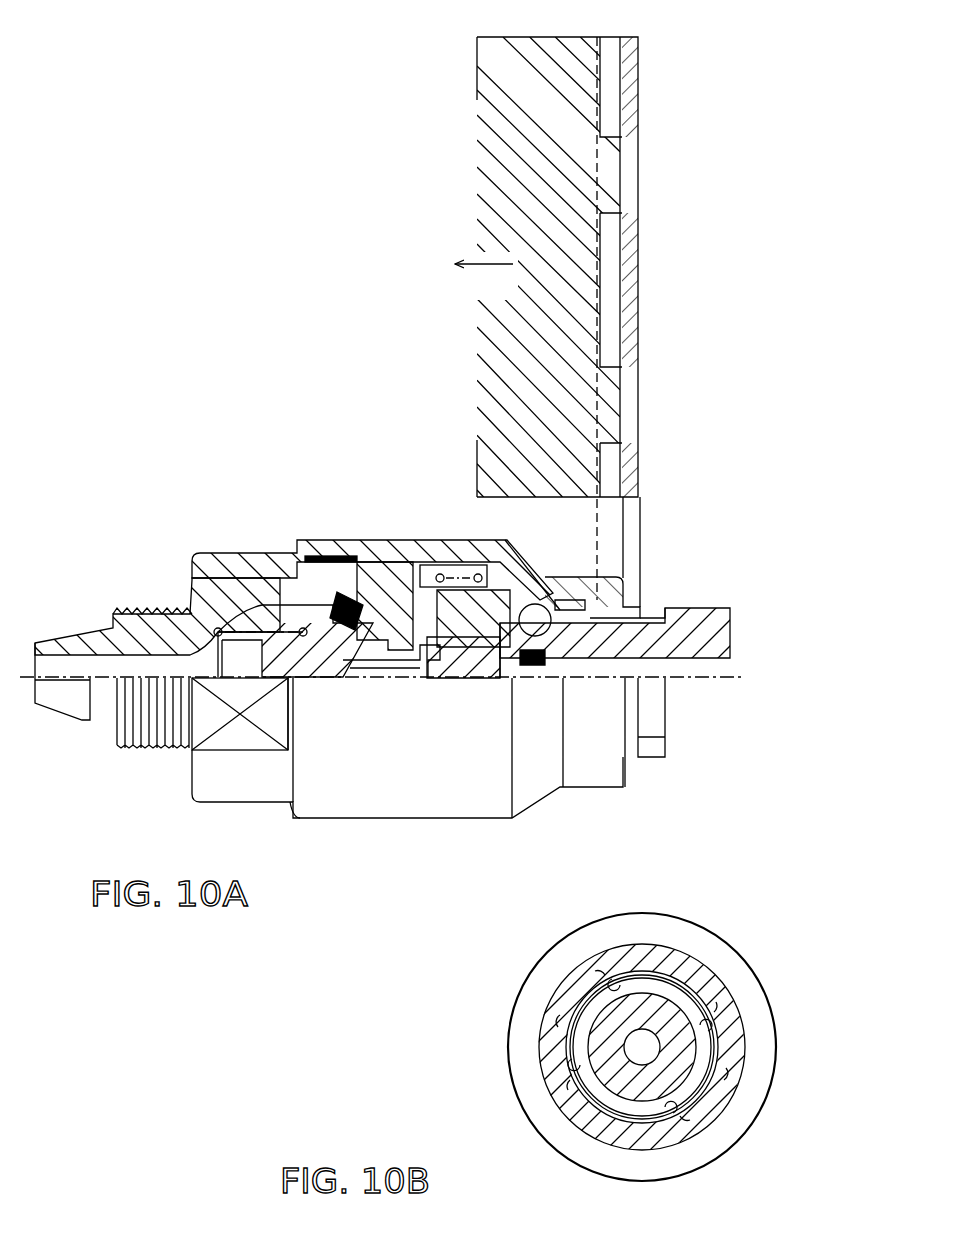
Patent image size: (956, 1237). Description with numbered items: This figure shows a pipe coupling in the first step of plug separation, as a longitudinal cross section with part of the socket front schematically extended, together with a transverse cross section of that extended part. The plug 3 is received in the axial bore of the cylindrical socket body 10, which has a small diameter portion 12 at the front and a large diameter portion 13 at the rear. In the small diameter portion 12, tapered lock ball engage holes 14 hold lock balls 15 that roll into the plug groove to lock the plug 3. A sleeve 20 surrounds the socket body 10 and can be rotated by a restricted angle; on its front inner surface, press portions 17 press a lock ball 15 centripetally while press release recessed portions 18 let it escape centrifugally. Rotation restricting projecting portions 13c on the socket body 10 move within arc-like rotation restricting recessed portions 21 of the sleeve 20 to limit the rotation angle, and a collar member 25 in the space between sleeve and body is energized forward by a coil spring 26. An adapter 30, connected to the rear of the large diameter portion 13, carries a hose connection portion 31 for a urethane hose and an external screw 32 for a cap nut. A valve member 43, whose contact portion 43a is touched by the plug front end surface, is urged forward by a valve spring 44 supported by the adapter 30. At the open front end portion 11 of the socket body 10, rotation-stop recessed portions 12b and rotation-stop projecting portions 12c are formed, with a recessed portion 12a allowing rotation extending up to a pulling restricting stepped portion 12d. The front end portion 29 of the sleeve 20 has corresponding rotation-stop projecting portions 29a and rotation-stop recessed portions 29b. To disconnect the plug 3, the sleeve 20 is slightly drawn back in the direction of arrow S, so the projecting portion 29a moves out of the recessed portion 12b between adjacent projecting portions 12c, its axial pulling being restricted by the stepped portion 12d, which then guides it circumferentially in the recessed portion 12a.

In FIG. 10A, the plug 3 is at (724, 600).
In FIG. 10B, the plug 3 is at (615, 1100).
In FIG. 10A, the socket body 10 is at (648, 183).
In FIG. 10B, the socket body 10 is at (578, 1090).
In FIG. 10A, the front end portion 11 is at (640, 612).
In FIG. 10B, the front end portion 11 is at (578, 1053).
In FIG. 10A, the small diameter portion 12 is at (584, 636).
In FIG. 10A, the recessed portion for allowing rotation 12a is at (612, 120).
In FIG. 10A, the rotation-stop recessed portion 12b is at (630, 205).
In FIG. 10B, the rotation-stop recessed portion 12b is at (598, 973).
In FIG. 10A, the rotation-stop projecting portion 12c is at (630, 280).
In FIG. 10B, the rotation-stop projecting portion 12c is at (692, 1000).
In FIG. 10A, the pulling restricting stepped portion 12d is at (600, 88).
In FIG. 10A, the large diameter portion 13 is at (230, 555).
In FIG. 10A, the rotation restricting projecting portion 13c is at (315, 553).
In FIG. 10A, the lock ball engage hole 14 is at (494, 660).
In FIG. 10A, the lock ball 15 is at (537, 637).
In FIG. 10A, the press portion 17 is at (558, 605).
In FIG. 10A, the press release recessed portion 18 is at (528, 585).
In FIG. 10A, the sleeve 20 is at (574, 35).
In FIG. 10B, the sleeve 20 is at (742, 948).
In FIG. 10A, the rotation restricting recessed portion 21 is at (368, 562).
In FIG. 10A, the collar member 25 is at (490, 590).
In FIG. 10A, the coil spring 26 is at (432, 565).
In FIG. 10A, the front end portion 29 is at (612, 578).
In FIG. 10B, the front end portion 29 is at (668, 952).
In FIG. 10A, the rotation-stop projecting portion 29a is at (612, 165).
In FIG. 10B, the rotation-stop projecting portion 29a is at (605, 990).
In FIG. 10A, the rotation-stop recessed portion 29b is at (611, 68).
In FIG. 10B, the rotation-stop recessed portion 29b is at (700, 1030).
In FIG. 10A, the adapter 30 is at (115, 603).
In FIG. 10A, the hose connection portion 31 is at (70, 643).
In FIG. 10A, the external screw 32 is at (140, 612).
In FIG. 10A, the valve member 43 is at (322, 677).
In FIG. 10A, the contact portion 43a is at (405, 665).
In FIG. 10A, the valve spring 44 is at (230, 720).
In FIG. 10A, the direction of arrow S is at (484, 280).